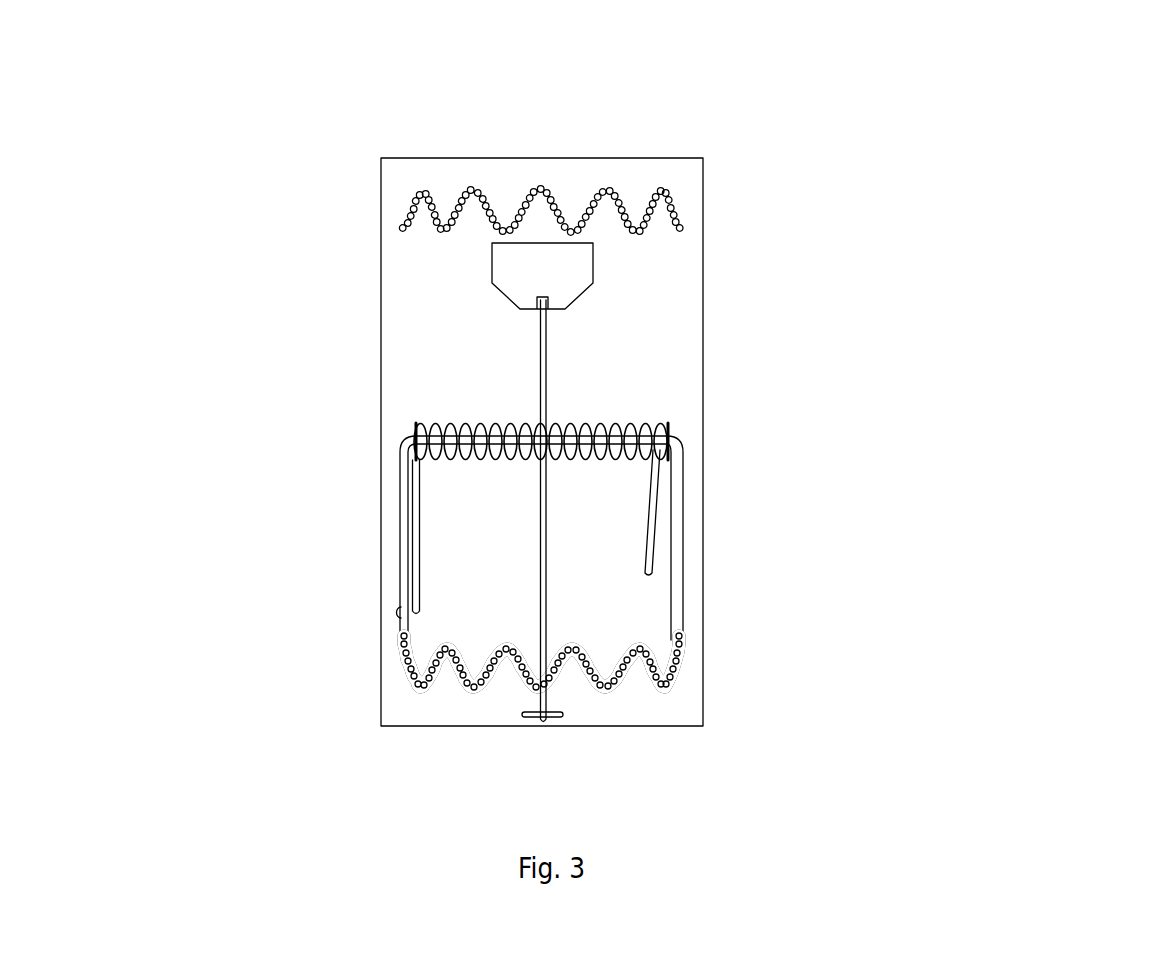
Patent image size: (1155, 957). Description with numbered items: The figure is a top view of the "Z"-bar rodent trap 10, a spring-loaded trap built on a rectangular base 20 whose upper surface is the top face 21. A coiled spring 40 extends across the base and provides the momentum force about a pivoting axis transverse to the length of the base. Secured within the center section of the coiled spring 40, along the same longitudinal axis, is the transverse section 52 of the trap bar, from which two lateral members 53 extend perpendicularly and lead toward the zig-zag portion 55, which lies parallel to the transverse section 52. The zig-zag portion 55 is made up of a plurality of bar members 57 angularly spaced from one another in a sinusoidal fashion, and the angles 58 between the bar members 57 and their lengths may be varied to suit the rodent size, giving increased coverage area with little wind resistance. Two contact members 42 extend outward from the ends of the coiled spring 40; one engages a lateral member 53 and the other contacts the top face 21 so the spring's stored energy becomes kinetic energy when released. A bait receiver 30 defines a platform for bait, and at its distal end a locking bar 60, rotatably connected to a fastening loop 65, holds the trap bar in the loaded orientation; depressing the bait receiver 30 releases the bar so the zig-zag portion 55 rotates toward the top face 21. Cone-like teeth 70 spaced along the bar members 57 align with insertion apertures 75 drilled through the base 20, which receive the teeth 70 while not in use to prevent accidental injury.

The "Z"-bar rodent trap 10 is at (1010, 128).
The base 20 is at (412, 330).
The top face 21 is at (653, 358).
The bait receiver 30 is at (568, 272).
The coiled spring 40 is at (427, 423).
The contact members 42 is at (418, 505).
The transverse section 52 is at (663, 438).
The lateral members 53 is at (405, 548).
The zig-zag portion 55 is at (676, 700).
The bar members 57 is at (463, 690).
The angles 58 is at (643, 672).
The locking bar 60 is at (545, 592).
The fastening loop 65 is at (528, 717).
The teeth 70 is at (413, 690).
The insertion apertures 75 is at (470, 185).